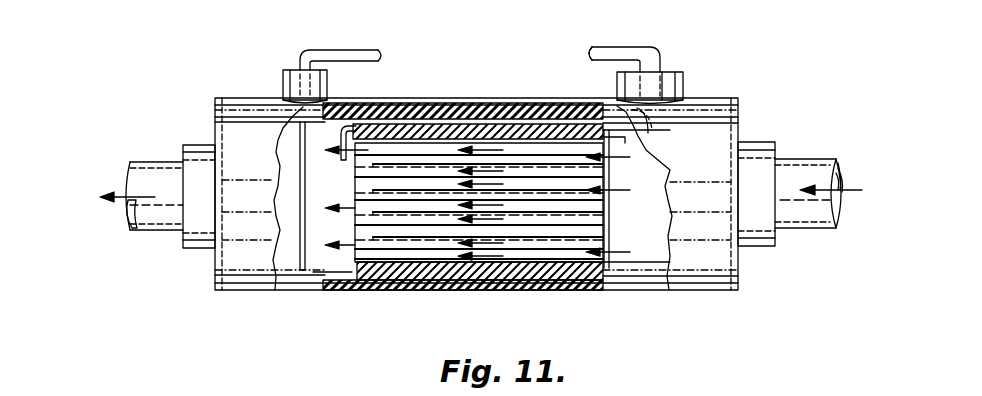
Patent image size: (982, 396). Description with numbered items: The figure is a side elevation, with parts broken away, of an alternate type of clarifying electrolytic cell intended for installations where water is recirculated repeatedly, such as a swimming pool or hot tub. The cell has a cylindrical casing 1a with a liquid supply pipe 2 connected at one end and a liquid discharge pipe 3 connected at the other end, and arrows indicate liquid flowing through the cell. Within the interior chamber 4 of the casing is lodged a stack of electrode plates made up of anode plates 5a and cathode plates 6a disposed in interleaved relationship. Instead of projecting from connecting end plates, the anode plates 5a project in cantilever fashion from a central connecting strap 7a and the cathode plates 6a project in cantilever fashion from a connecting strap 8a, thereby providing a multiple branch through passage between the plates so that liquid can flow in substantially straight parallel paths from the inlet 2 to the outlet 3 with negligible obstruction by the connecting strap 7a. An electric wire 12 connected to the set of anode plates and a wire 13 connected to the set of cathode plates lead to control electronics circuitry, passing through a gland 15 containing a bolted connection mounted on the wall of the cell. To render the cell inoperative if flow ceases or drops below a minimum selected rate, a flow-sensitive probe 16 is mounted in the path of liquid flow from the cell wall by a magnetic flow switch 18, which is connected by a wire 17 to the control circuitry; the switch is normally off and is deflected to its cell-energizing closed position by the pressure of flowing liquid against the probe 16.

The cylindrical casing 1a is at (707, 265).
The liquid supply pipe 2 is at (812, 212).
The liquid discharge pipe 3 is at (158, 213).
The interior chamber 4 is at (645, 263).
The anode plates 5a is at (545, 212).
The cathode plates 6a is at (410, 262).
The central connecting strap 7a is at (620, 221).
The connecting strap 8a is at (356, 212).
The electric wire 12 is at (658, 50).
The wire 13 is at (600, 62).
The gland 15 is at (676, 83).
The flow-sensitive probe 16 is at (300, 258).
The wire 17 is at (346, 49).
The magnetic flow switch 18 is at (283, 82).